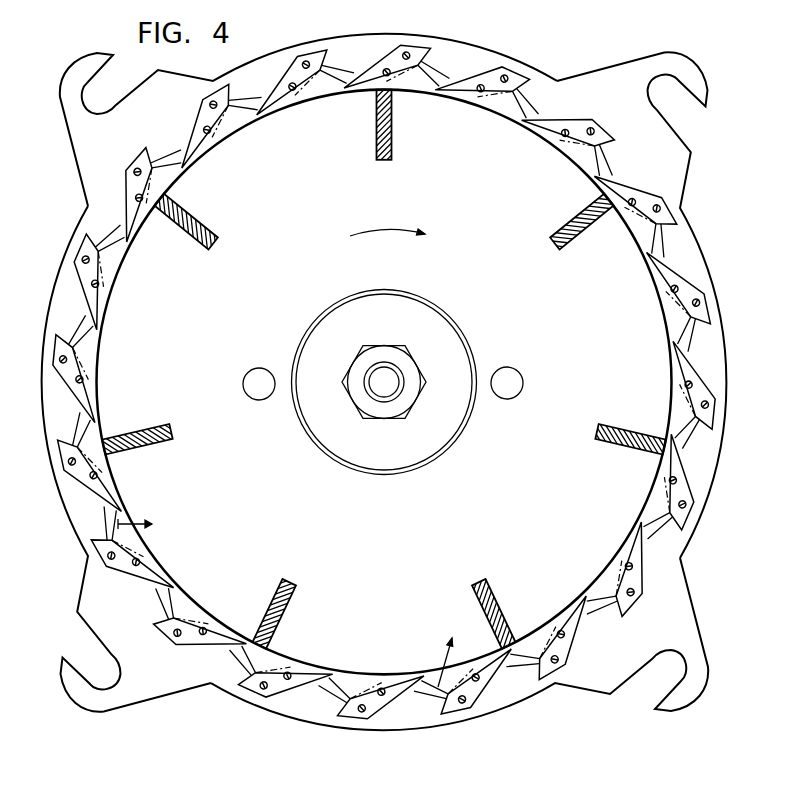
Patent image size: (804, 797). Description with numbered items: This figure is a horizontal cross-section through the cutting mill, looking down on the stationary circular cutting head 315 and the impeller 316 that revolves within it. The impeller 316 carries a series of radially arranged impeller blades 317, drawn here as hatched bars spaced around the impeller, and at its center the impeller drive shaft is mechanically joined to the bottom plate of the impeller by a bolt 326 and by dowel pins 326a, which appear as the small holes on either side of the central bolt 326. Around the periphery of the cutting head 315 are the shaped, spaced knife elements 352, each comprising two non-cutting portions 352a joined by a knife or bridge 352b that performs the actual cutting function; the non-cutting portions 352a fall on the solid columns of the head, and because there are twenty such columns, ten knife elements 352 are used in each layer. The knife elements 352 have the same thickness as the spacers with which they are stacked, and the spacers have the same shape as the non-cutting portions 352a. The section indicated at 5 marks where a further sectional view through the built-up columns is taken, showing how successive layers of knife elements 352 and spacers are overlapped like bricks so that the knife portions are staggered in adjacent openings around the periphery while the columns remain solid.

The cutting head 315 is at (686, 253).
The impeller 316 is at (394, 271).
The impeller blades 317 is at (388, 130).
The bolt 326 is at (393, 380).
The dowel pins 326a is at (252, 376).
The knife elements 352 is at (241, 118).
The non-cutting portions 352a is at (624, 214).
The knife or bridge 352b is at (635, 240).
The section line 5 is at (286, 601).